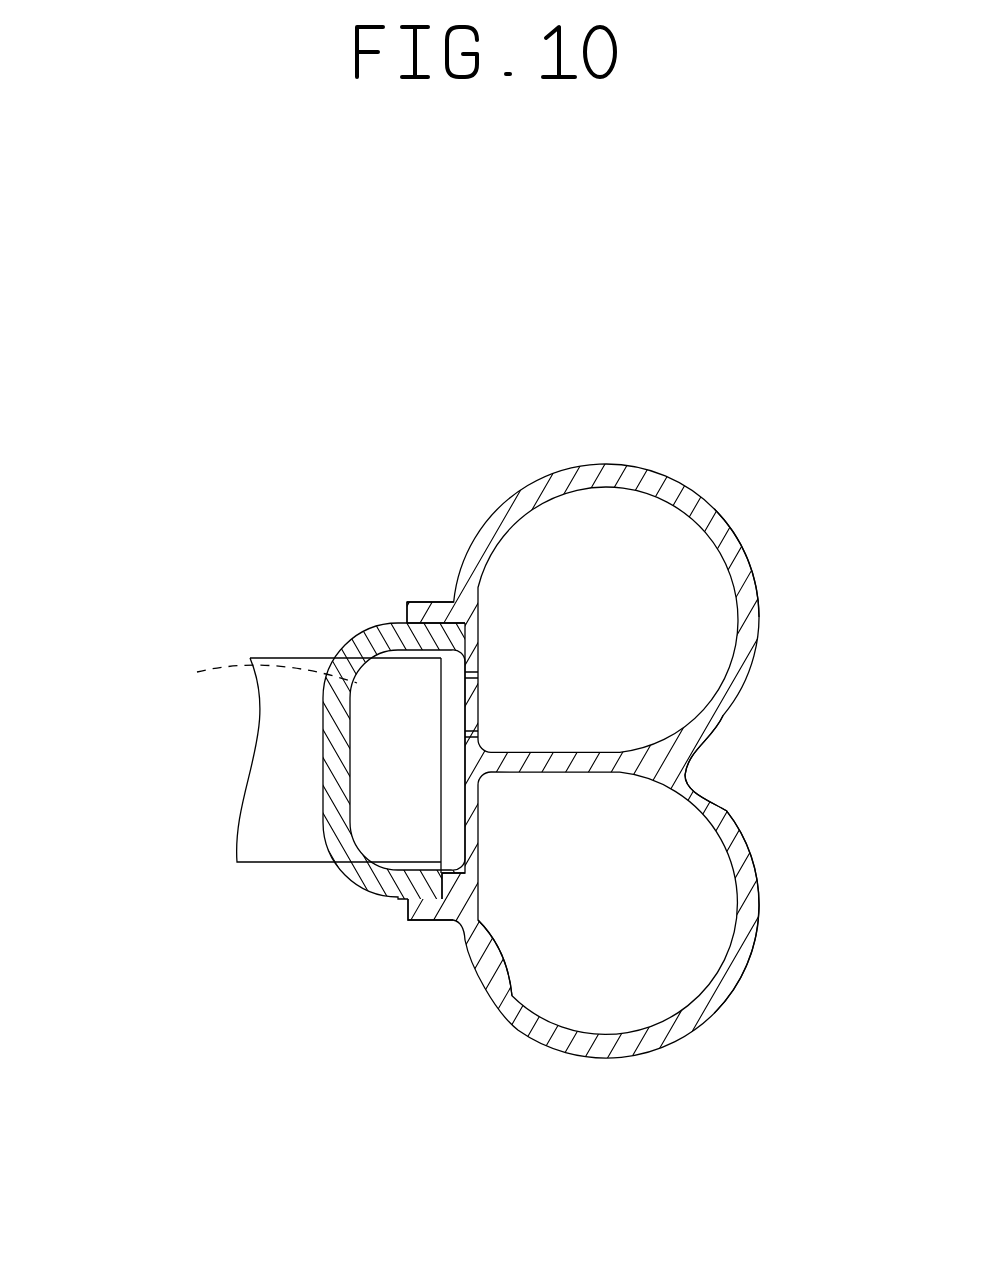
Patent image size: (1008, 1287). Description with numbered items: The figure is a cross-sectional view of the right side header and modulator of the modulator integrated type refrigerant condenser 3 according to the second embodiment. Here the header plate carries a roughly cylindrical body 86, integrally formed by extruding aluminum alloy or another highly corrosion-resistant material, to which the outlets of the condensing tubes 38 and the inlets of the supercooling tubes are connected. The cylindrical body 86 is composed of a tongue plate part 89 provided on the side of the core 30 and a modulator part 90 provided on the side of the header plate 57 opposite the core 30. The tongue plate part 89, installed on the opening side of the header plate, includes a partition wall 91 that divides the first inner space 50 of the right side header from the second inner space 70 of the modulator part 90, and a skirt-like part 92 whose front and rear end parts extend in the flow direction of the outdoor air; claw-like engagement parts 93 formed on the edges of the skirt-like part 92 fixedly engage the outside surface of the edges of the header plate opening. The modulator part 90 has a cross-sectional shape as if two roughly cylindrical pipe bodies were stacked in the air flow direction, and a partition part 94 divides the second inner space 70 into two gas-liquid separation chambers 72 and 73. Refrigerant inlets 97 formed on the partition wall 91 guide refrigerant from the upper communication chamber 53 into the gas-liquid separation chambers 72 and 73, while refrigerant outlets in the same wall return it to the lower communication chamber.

The modulator integrated type refrigerant condenser 3 is at (694, 466).
The core 30 is at (259, 755).
The condensing tubes 38 is at (282, 845).
The first inner space 50 is at (458, 400).
The upper communication chamber 53 is at (452, 660).
The through holes 57 is at (256, 670).
The second inner space 70 is at (673, 840).
The gas-liquid separation chamber 72 is at (616, 657).
The gas-liquid separation chamber 73 is at (616, 922).
The roughly cylindrical body 86 is at (749, 990).
The tongue plate part 89 is at (458, 935).
The modulator part 90 is at (742, 572).
The partition wall 91 is at (503, 985).
The skirt-like part 92 is at (447, 912).
The claw-like engagement parts 93 is at (420, 913).
The partition part 94 is at (603, 752).
The refrigerant inlets 97 is at (472, 820).